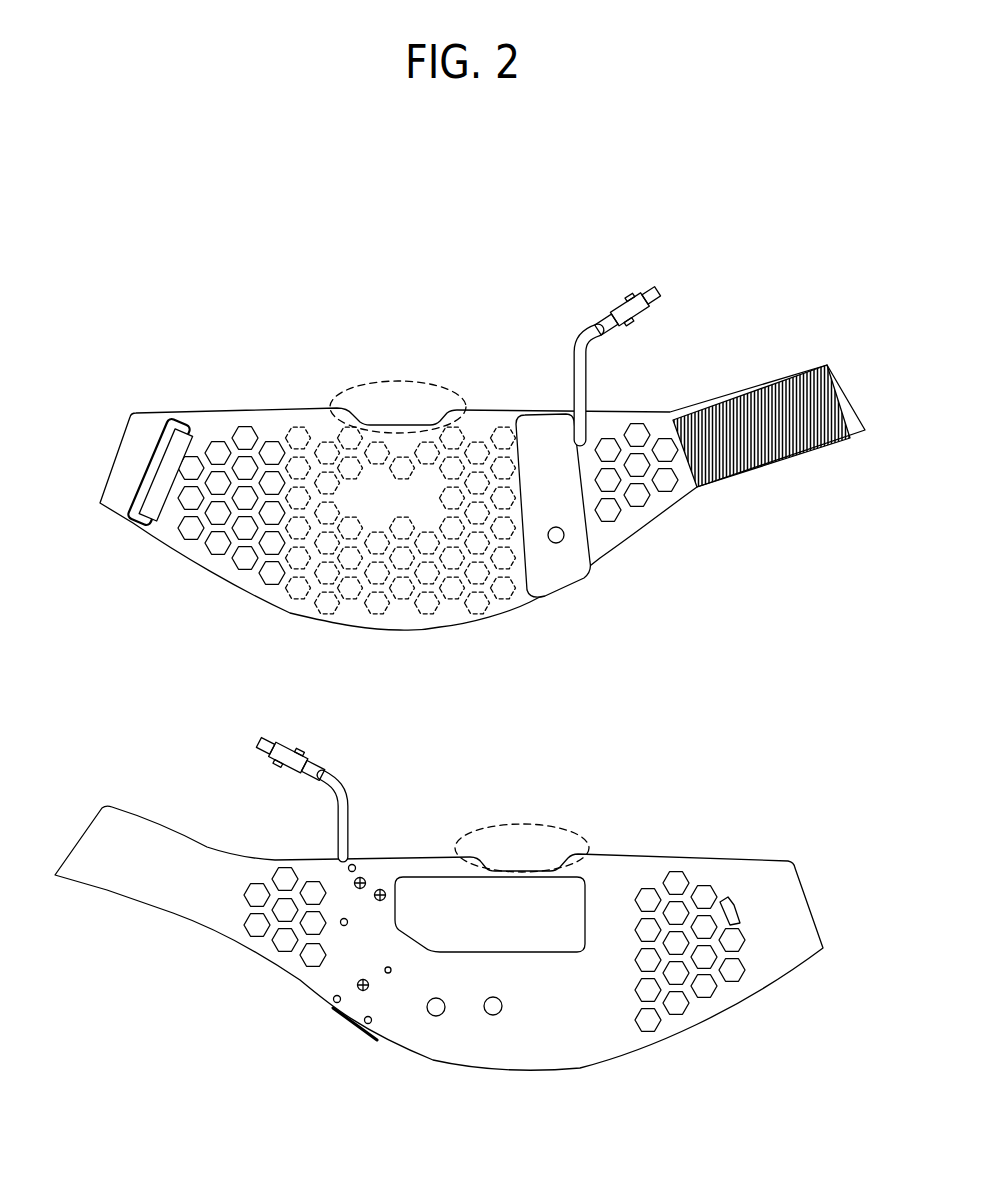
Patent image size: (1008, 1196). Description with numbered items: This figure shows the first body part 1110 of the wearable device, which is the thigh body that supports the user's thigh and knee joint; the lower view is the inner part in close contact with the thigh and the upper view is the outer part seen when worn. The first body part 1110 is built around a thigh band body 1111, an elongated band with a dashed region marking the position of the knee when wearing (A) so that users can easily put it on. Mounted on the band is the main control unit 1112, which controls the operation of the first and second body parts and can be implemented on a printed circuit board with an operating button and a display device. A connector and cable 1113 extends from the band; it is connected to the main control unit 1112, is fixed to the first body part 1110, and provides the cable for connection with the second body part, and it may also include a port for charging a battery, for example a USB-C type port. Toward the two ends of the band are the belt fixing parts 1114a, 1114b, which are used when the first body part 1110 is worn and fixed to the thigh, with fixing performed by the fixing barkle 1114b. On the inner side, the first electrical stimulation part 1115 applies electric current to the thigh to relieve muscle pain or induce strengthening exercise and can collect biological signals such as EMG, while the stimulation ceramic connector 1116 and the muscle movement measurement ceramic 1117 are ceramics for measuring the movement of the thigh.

The first body part 1110 is at (742, 200).
The thigh band body 1111 is at (246, 398).
The main control unit 1112 is at (545, 417).
The connector and cable 1113 is at (640, 300).
The belt fixing part 1114a is at (762, 384).
The fixing barkle 1114b is at (157, 530).
The first electrical stimulation part 1115 is at (433, 890).
The stimulation ceramic connector 1116 is at (493, 1016).
The muscle movement measurement ceramic 1117 is at (363, 992).
The knee position A is at (400, 384).